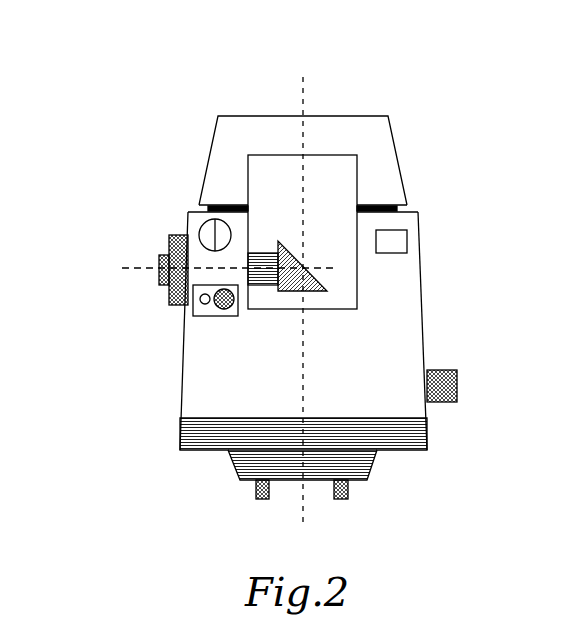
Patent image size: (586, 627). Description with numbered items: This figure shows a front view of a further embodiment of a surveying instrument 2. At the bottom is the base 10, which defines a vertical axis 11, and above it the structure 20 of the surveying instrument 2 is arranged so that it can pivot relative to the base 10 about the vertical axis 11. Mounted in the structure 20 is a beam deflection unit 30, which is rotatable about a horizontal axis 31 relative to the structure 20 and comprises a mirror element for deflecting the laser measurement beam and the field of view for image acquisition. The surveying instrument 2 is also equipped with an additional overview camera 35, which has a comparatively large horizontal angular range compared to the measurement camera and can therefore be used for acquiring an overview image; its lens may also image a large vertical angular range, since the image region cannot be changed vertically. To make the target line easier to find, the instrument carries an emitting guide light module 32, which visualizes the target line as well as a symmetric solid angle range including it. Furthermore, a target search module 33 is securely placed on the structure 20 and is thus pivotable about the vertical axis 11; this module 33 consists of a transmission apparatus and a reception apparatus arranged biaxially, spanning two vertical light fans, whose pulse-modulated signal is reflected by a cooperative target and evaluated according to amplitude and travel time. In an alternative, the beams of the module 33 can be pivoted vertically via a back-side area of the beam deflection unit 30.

The surveying instrument 2 is at (303, 126).
The base 10 is at (287, 465).
The vertical axis 11 is at (288, 511).
The structure 20 is at (286, 331).
The beam deflection unit 30 is at (337, 189).
The horizontal axis 31 is at (138, 275).
The EGL module 32 is at (177, 220).
The target search module 33 is at (176, 335).
The overview camera 35 is at (430, 232).